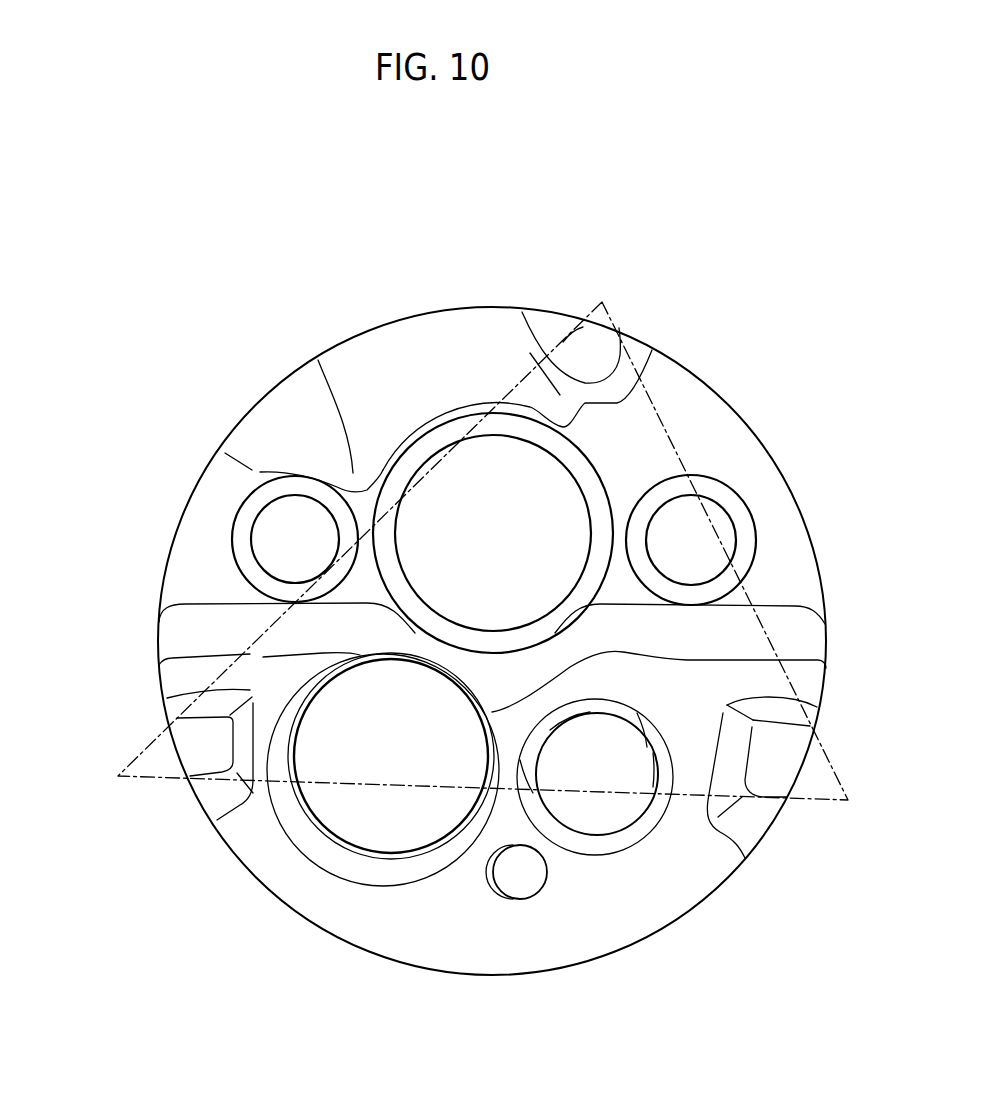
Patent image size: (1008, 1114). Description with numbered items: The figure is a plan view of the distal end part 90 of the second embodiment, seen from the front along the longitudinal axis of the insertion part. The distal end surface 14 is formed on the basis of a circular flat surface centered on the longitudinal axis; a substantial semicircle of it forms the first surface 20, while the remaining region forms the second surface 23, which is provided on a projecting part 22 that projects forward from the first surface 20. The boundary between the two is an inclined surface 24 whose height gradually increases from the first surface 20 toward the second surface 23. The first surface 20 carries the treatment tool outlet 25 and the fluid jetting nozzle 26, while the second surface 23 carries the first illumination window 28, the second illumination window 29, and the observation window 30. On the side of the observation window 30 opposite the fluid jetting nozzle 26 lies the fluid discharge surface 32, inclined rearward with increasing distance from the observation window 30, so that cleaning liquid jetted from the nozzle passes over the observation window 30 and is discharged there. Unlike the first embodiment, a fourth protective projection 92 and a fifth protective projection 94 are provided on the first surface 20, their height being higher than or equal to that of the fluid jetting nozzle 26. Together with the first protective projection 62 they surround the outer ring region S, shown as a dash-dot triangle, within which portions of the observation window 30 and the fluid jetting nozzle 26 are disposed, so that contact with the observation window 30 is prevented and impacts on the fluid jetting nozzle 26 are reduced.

The distal end part 90 is at (433, 212).
The projecting part 22 is at (207, 442).
The fluid discharge surface 32 is at (428, 342).
The outer ring region S is at (602, 302).
The first protective projection 62 is at (593, 353).
The first illumination window 28 is at (293, 520).
The second illumination window 29 is at (690, 538).
The observation window 30 is at (537, 517).
The distal end surface 14 is at (78, 617).
The second surface 23 is at (183, 580).
The inclined surface 24 is at (253, 615).
The fourth protective projection 92 is at (197, 740).
The fifth protective projection 94 is at (785, 755).
The first surface 20 is at (247, 835).
The treatment tool outlet 25 is at (383, 805).
The fluid jetting nozzle 26 is at (613, 808).